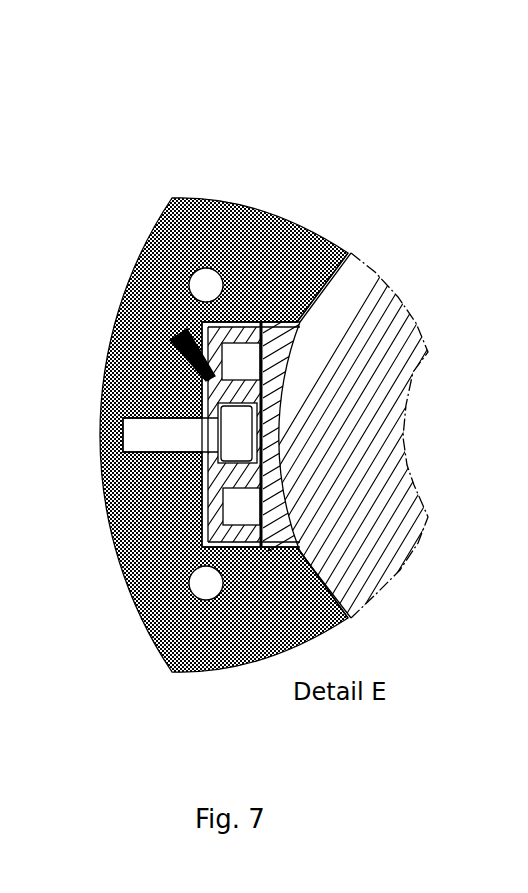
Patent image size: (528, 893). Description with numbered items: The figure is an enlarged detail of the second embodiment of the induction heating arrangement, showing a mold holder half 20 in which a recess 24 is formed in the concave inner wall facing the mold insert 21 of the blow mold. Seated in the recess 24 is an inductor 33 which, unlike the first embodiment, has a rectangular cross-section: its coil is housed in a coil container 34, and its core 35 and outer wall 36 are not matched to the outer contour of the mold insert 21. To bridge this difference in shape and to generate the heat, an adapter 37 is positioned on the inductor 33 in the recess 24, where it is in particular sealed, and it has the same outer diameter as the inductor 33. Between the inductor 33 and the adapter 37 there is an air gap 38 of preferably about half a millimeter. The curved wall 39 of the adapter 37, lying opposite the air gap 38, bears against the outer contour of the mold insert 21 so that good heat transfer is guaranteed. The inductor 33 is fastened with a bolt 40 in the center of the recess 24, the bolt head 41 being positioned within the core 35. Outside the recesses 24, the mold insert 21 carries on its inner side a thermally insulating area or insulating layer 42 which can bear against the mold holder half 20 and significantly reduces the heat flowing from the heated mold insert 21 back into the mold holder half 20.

The mold holder half 20 is at (232, 140).
The mold insert 21 is at (376, 500).
The recess 24 is at (320, 232).
The inductor 33 is at (127, 297).
The coil container 34 is at (232, 466).
The core 35 is at (243, 392).
The outer wall 36 is at (237, 338).
The adapter 37 is at (276, 480).
The air gap 38 is at (262, 512).
The curved wall 39 is at (281, 423).
The bolt 40 is at (176, 445).
The bolt head 41 is at (228, 430).
The insulating layer 42 is at (312, 292).